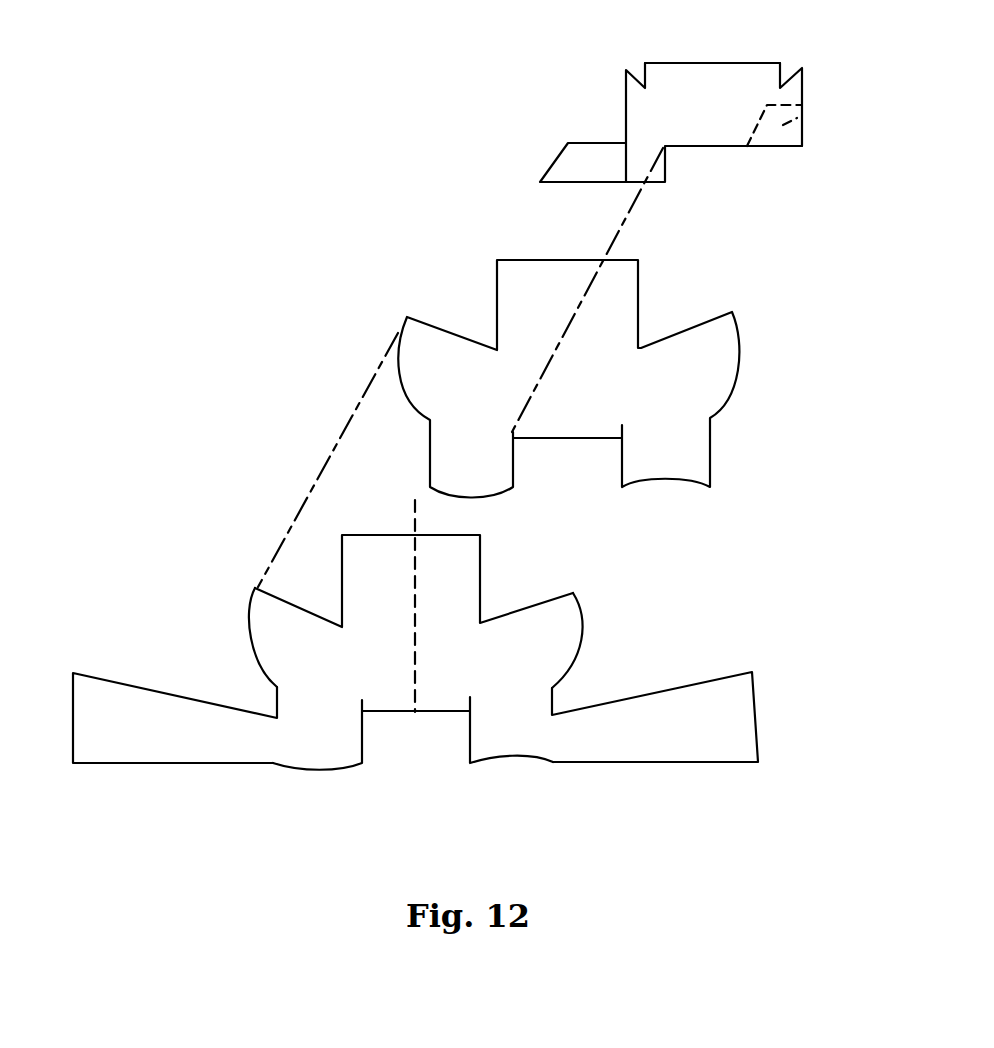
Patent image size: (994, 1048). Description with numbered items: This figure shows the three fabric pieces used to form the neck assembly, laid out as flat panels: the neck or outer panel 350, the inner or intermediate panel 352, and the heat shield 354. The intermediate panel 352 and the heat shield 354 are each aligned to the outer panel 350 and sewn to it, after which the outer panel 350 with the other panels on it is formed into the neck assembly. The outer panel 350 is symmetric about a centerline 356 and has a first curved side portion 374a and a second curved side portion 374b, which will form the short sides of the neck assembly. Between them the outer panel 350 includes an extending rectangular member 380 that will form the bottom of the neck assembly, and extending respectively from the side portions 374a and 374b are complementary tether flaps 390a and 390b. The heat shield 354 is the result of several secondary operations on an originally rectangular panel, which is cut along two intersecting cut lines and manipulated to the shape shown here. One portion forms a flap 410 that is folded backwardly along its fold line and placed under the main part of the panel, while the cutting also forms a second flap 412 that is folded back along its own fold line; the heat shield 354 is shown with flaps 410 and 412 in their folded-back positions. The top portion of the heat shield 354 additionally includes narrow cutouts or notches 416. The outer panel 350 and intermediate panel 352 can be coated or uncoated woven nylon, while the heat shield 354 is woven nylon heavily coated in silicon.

The flap 410 is at (803, 113).
The second flap 412 is at (572, 158).
The notches 416 is at (780, 63).
The heat shield 354 is at (739, 148).
The intermediate panel 352 is at (687, 450).
The outer panel 350 is at (165, 670).
The first curved side portion 374a is at (557, 620).
The second curved side portion 374b is at (273, 628).
The extending rectangular member 380 is at (460, 565).
The tether flap 390a is at (680, 710).
The tether flap 390b is at (178, 742).
The centerline 356 is at (418, 717).